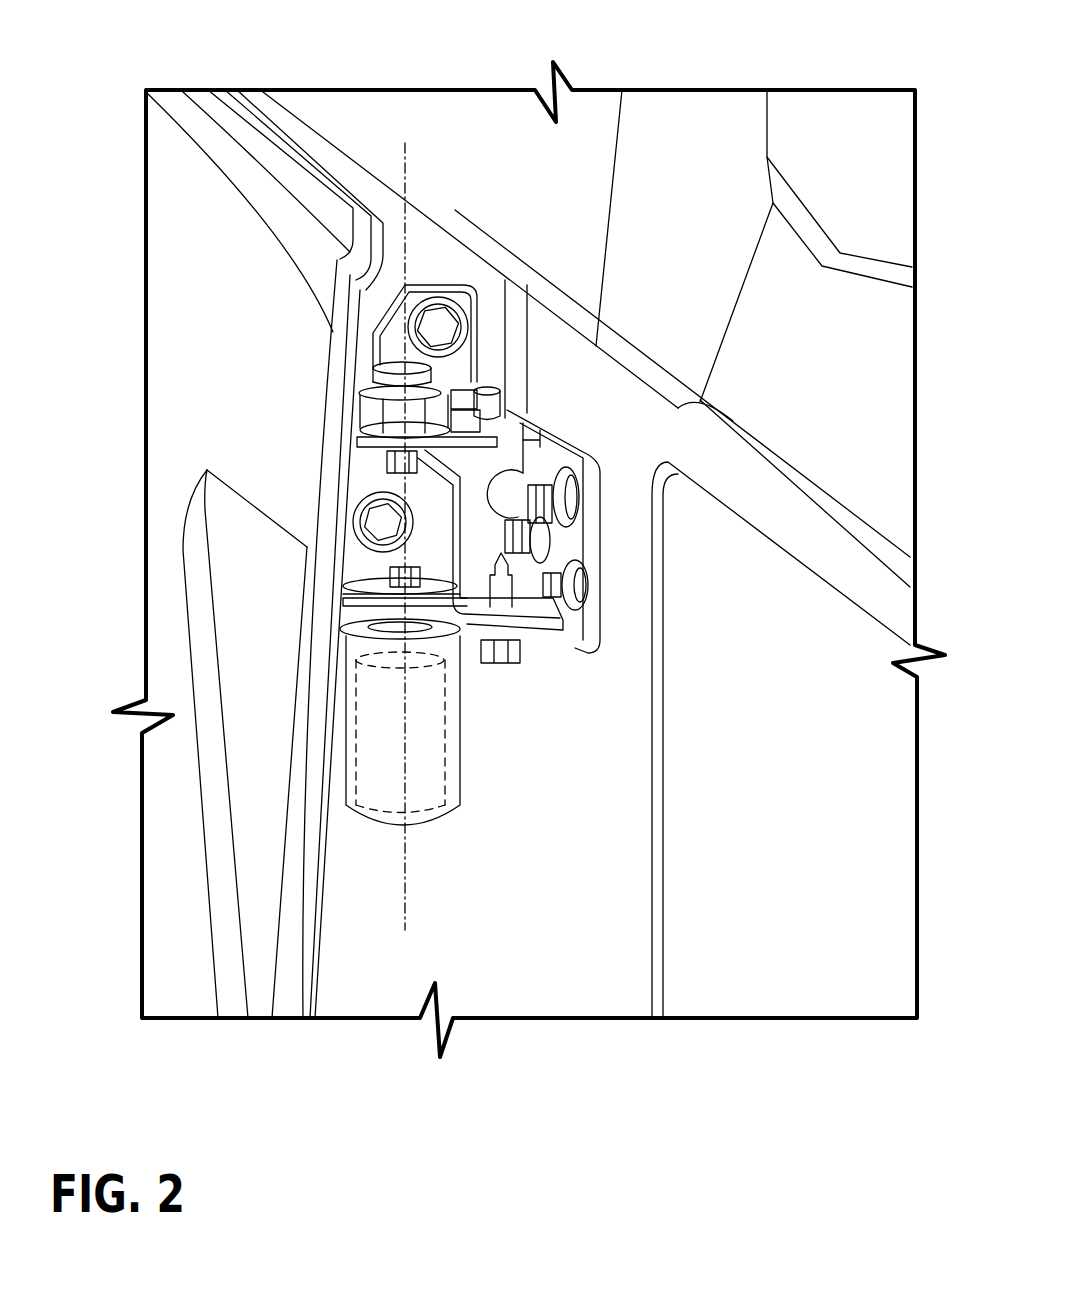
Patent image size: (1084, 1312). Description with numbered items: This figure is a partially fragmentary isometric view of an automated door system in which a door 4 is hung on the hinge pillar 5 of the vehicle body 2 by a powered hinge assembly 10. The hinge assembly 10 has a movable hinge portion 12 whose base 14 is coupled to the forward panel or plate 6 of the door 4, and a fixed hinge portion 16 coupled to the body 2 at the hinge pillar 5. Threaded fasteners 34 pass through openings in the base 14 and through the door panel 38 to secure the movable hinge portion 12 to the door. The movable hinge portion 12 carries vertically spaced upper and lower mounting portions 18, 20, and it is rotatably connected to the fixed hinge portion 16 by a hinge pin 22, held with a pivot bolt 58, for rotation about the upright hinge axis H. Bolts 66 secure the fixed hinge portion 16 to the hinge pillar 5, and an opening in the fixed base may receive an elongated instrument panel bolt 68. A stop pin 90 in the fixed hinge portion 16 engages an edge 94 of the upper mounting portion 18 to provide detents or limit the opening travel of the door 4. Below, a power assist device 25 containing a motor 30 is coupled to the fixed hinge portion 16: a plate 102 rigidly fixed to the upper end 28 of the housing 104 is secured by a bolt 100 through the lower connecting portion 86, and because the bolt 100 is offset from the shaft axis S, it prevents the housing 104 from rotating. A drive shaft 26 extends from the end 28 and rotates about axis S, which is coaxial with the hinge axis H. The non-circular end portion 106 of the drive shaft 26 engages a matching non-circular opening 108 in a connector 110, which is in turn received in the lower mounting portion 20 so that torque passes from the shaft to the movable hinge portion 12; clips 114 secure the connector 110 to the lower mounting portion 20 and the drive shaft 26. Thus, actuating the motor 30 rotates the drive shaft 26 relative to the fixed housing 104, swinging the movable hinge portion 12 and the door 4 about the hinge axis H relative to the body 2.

The body 2 is at (752, 470).
The door 4 is at (245, 388).
The hinge pillar 5 is at (622, 973).
The forward panel or plate 6 is at (515, 280).
The hinge assembly 10 is at (247, 655).
The movable hinge portion 12 is at (401, 283).
The base 14 is at (382, 340).
The fixed hinge portion 16 is at (585, 664).
The upper mounting portion 18 is at (365, 400).
The lower mounting portion 20 is at (375, 600).
The hinge pin 22 is at (373, 378).
The power assist device 25 is at (293, 930).
The drive shaft 26 is at (358, 764).
The end 28 is at (347, 712).
The motor 30 is at (430, 787).
The threaded fasteners 34 is at (447, 323).
The door panel 38 is at (382, 290).
The pivot bolt 58 is at (388, 460).
The bolts 66 is at (548, 510).
The instrument panel bolt 68 is at (567, 580).
The lower connecting portion 86 is at (535, 612).
The stop pin 90 is at (440, 396).
The edge 94 is at (490, 392).
The bolt 100 is at (503, 608).
The plate 102 is at (358, 634).
The housing 104 is at (340, 827).
The end portion 106 is at (375, 597).
The non-circular opening 108 is at (400, 606).
The connector 110 is at (395, 572).
The clips 114 is at (356, 534).
The hinge axis H is at (408, 158).
The shaft axis S is at (403, 883).